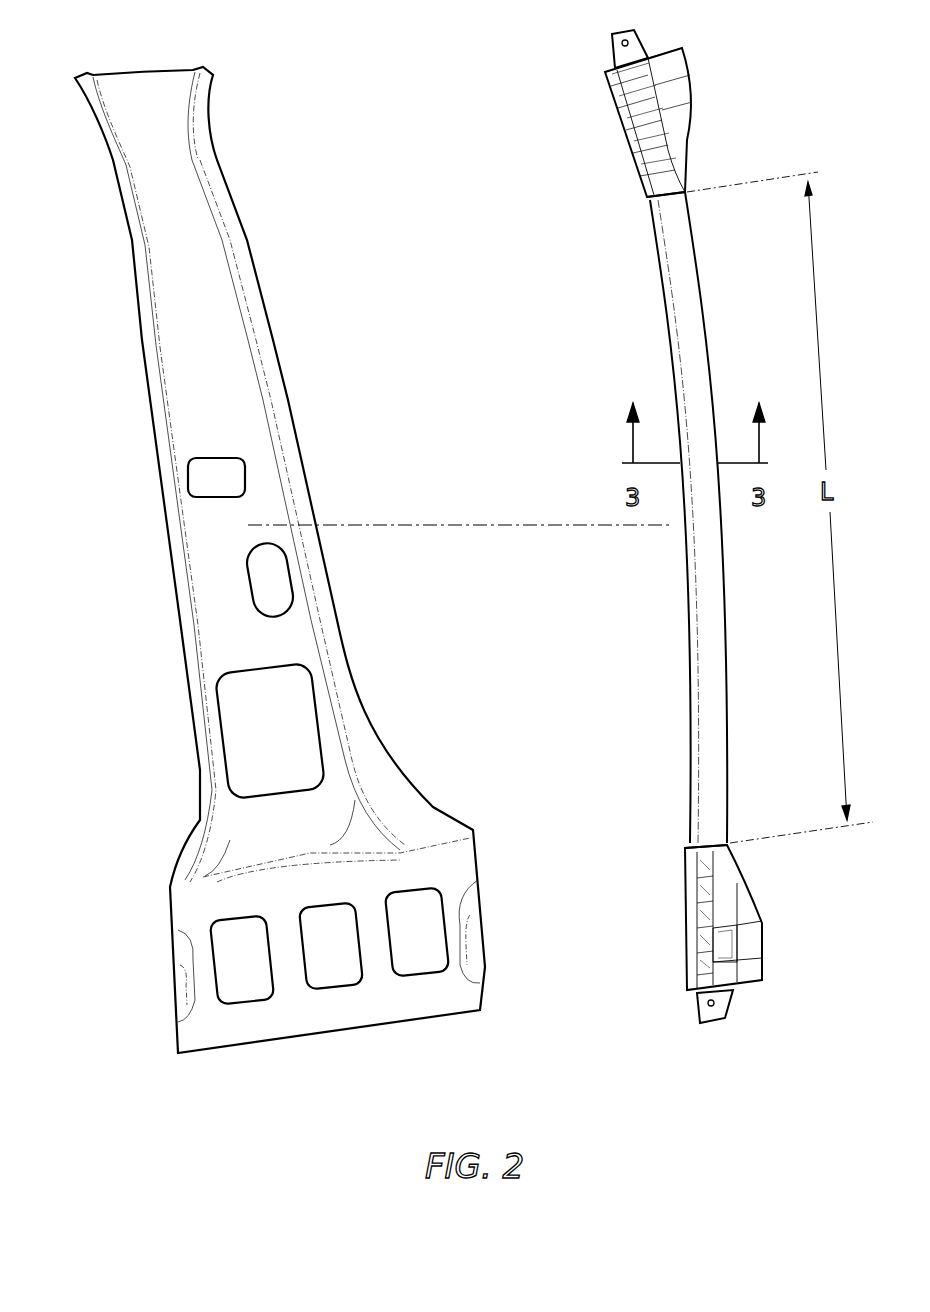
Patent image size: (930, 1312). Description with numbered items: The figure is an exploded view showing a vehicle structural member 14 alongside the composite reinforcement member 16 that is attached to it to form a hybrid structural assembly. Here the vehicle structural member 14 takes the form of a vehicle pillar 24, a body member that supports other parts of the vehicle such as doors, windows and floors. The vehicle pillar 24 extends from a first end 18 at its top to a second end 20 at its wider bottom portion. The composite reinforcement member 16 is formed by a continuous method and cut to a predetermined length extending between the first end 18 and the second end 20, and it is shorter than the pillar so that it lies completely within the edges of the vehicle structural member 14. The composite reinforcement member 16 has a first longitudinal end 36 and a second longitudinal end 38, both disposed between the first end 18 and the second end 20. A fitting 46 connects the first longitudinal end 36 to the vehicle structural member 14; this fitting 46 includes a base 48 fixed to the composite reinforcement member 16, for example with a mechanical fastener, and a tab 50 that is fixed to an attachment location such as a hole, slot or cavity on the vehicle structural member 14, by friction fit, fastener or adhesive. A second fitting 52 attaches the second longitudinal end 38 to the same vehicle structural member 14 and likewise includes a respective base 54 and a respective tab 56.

The vehicle structural member 14 is at (215, 280).
The first end 18 is at (202, 112).
The second end 20 is at (213, 1033).
The vehicle pillar 24 is at (253, 353).
The composite reinforcement member 16 is at (690, 338).
The first longitudinal end 36 is at (650, 207).
The second longitudinal end 38 is at (688, 838).
The fitting 46 is at (657, 93).
The base 48 is at (673, 170).
The tab 50 is at (610, 45).
The second fitting 52 is at (730, 947).
The base 54 is at (723, 878).
The tab 56 is at (728, 1007).